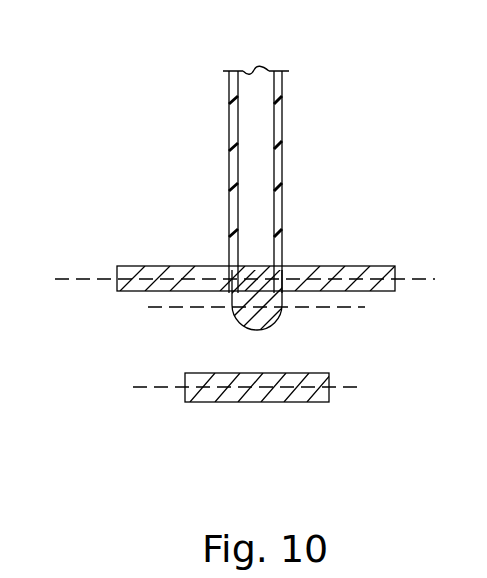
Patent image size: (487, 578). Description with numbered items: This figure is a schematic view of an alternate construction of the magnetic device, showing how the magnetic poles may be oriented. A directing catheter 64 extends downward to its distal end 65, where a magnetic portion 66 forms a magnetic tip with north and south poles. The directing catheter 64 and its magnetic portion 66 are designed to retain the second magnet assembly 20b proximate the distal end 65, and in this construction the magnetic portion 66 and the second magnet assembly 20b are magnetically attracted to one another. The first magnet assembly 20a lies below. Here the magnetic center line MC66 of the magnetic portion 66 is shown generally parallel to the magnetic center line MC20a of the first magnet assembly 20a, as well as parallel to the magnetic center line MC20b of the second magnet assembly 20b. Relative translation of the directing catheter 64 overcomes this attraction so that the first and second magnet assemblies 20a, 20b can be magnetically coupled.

The directing catheter 64 is at (283, 120).
The distal end 65 is at (229, 209).
The second magnet assembly 20b is at (362, 266).
The first magnet assembly 20a is at (295, 403).
The magnetic portion 66 is at (278, 316).
The magnetic center line of the second magnet assembly MC20b is at (88, 279).
The magnetic center line of the magnetic portion MC66 is at (150, 307).
The magnetic center line of the first magnet assembly MC20a is at (172, 388).